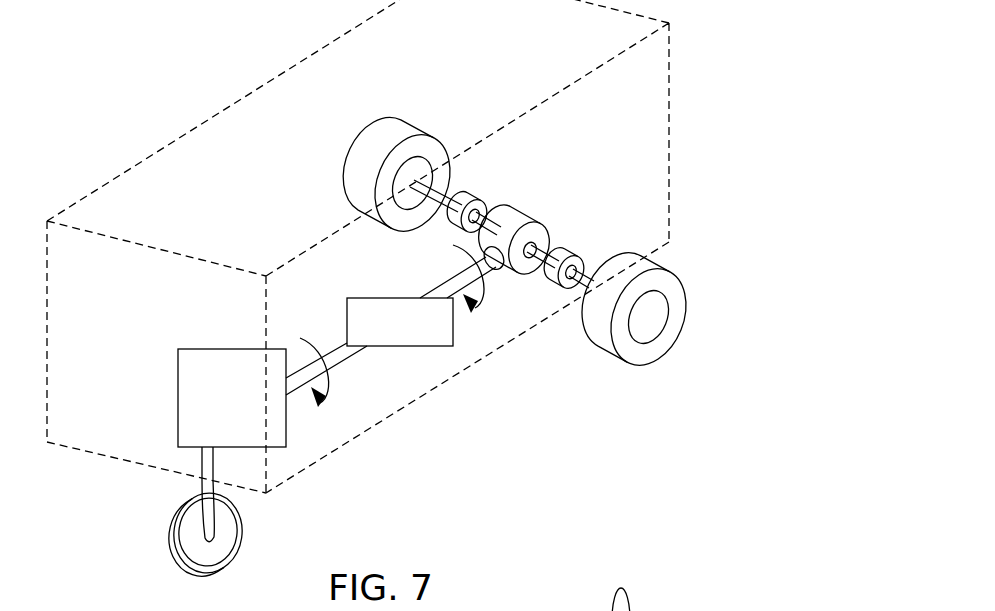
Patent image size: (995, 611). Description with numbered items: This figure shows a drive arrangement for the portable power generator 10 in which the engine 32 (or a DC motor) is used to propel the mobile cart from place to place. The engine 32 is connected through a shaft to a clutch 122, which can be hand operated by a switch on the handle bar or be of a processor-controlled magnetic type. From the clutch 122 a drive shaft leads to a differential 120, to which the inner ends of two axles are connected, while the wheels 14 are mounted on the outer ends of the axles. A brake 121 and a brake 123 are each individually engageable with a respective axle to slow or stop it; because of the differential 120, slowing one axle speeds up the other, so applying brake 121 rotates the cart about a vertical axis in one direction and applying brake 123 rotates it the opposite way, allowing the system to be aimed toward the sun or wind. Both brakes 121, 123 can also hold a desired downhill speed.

The vehicle 10 is at (92, 192).
The wheels 14 is at (433, 148).
The engine 32 is at (202, 348).
The differential 120 is at (527, 213).
The brake 121 is at (477, 192).
The clutch 122 is at (453, 318).
The brake 123 is at (570, 247).